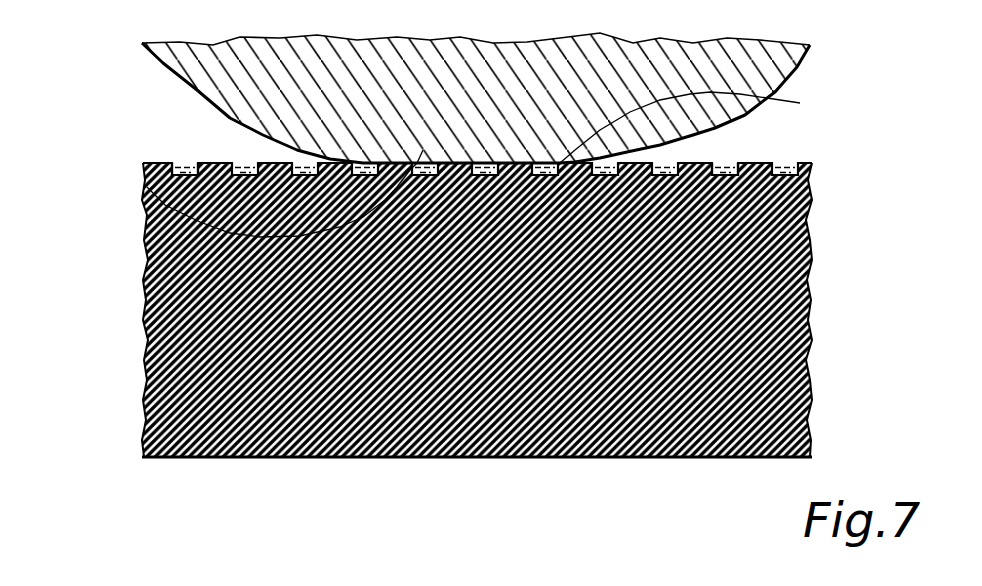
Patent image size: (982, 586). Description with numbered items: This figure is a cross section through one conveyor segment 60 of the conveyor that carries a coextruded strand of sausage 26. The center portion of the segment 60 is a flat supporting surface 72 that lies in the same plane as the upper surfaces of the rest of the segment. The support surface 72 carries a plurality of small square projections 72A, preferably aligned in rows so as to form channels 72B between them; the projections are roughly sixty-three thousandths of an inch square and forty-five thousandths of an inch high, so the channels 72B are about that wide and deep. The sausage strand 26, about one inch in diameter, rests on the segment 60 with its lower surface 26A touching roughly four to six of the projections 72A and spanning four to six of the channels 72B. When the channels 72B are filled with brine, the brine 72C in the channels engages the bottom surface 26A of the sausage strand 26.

The strand of sausage 26 is at (817, 82).
The lower surface of sausage strand 26A is at (147, 187).
The conveyor segment 60 is at (813, 180).
The flat supporting surface 72 is at (757, 160).
The projections 72A is at (333, 162).
The channels 72B is at (723, 175).
The brine 72C is at (178, 163).